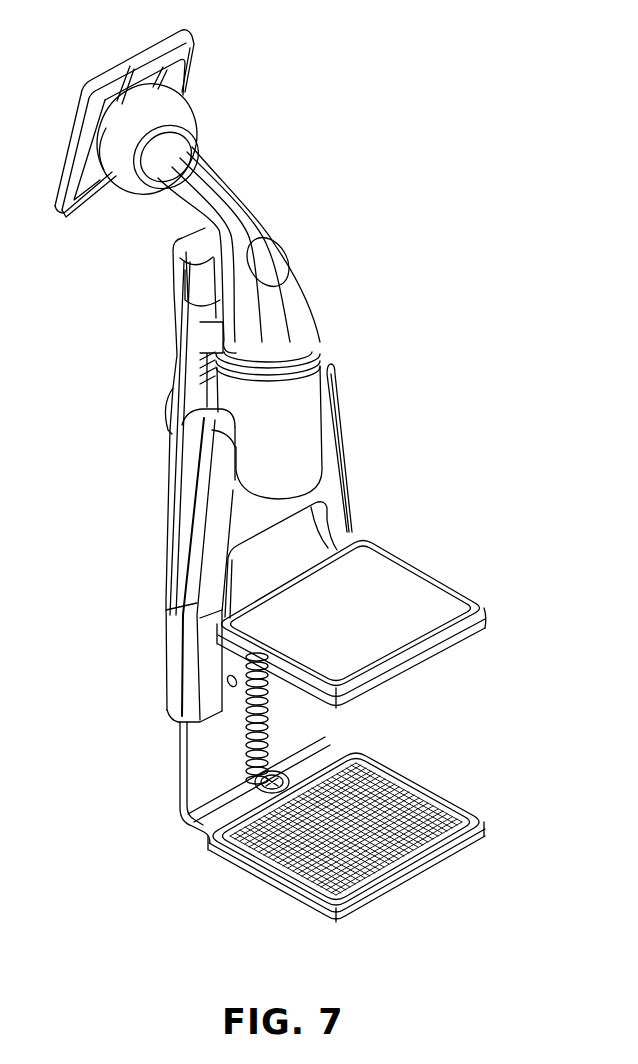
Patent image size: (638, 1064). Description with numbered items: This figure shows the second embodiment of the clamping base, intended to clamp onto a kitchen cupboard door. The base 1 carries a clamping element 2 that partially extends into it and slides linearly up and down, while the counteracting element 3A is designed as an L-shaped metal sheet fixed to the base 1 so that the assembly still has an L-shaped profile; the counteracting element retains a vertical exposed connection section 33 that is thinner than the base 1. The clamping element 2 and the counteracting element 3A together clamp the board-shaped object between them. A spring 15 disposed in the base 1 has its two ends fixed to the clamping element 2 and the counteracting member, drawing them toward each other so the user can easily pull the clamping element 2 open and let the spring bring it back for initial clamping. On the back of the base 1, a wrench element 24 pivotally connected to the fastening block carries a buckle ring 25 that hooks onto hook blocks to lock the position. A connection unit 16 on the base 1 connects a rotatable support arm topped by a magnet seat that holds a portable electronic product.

The base 1 is at (196, 552).
The clamping element 2 is at (448, 578).
The counteracting element 3A is at (212, 818).
The spring 15 is at (268, 722).
The connection unit 16 is at (299, 426).
The wrench element 24 is at (176, 373).
The buckle ring 25 is at (170, 421).
The connection section 33 is at (200, 752).